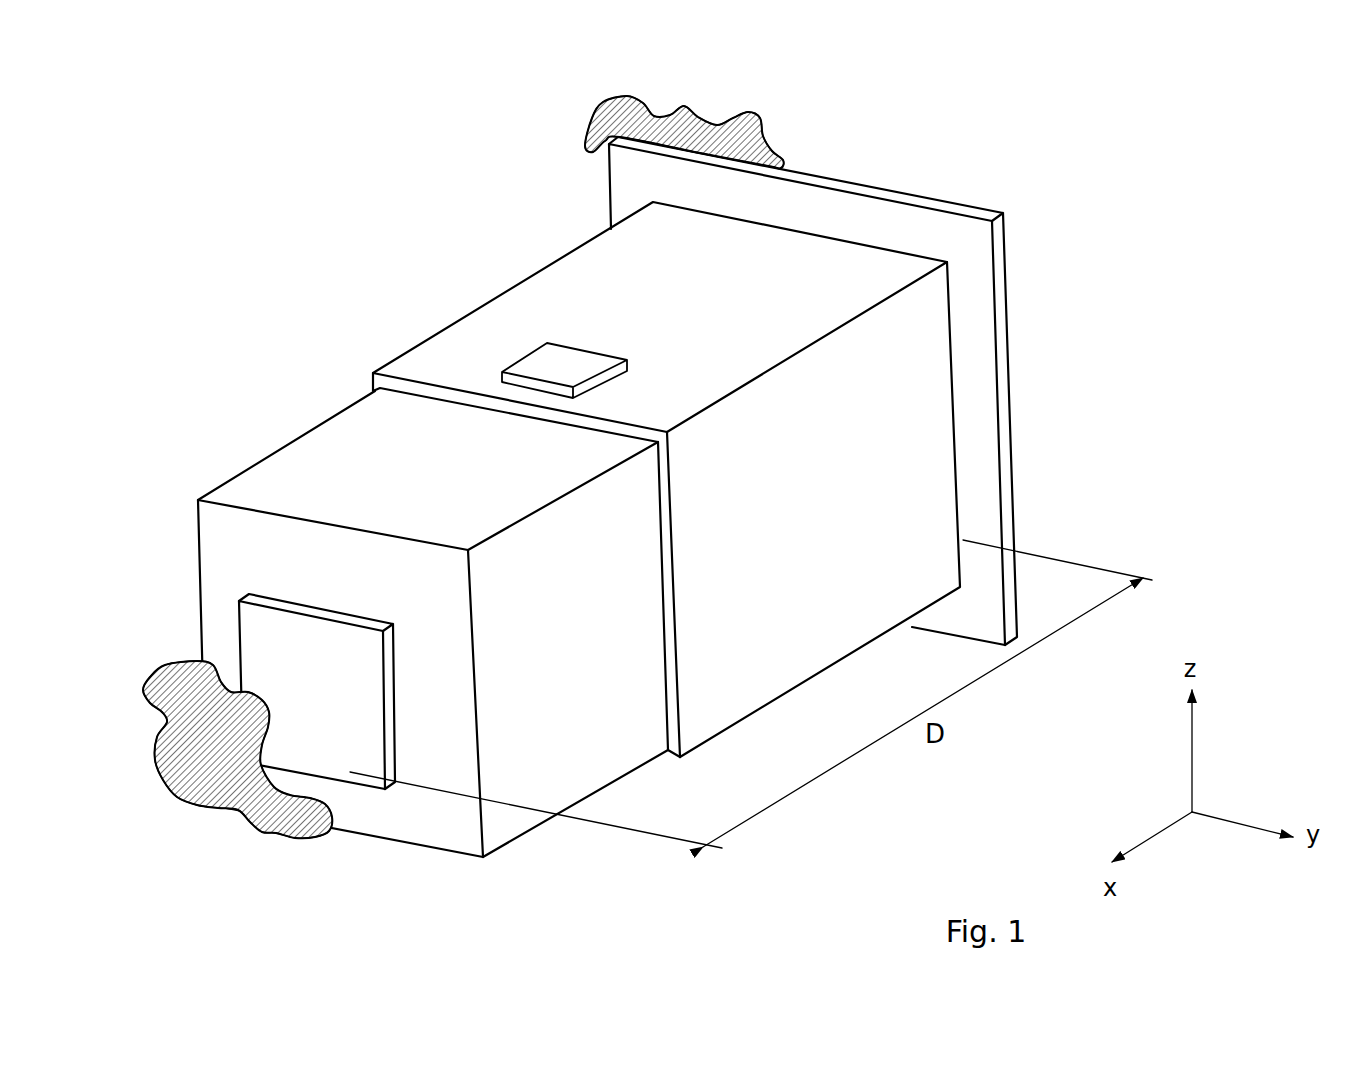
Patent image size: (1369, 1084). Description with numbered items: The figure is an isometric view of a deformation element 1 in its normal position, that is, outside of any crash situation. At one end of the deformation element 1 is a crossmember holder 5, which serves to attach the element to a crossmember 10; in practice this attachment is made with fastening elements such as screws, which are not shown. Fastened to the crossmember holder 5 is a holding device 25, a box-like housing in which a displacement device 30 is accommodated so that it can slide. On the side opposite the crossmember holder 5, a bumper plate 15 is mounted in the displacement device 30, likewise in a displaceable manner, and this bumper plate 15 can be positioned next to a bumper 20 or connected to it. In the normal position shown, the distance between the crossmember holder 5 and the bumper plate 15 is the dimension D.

The deformation element 1 is at (1067, 258).
The crossmember holder 5 is at (622, 207).
The crossmember 10 is at (763, 132).
The bumper plate 15 is at (300, 668).
The bumper 20 is at (195, 707).
The holding device 25 is at (585, 302).
The displacement device 30 is at (353, 462).